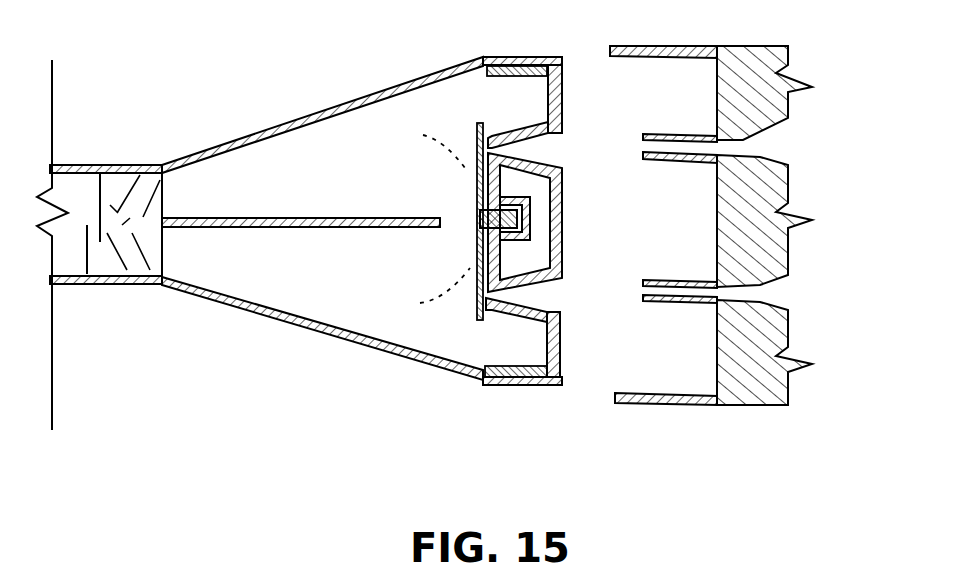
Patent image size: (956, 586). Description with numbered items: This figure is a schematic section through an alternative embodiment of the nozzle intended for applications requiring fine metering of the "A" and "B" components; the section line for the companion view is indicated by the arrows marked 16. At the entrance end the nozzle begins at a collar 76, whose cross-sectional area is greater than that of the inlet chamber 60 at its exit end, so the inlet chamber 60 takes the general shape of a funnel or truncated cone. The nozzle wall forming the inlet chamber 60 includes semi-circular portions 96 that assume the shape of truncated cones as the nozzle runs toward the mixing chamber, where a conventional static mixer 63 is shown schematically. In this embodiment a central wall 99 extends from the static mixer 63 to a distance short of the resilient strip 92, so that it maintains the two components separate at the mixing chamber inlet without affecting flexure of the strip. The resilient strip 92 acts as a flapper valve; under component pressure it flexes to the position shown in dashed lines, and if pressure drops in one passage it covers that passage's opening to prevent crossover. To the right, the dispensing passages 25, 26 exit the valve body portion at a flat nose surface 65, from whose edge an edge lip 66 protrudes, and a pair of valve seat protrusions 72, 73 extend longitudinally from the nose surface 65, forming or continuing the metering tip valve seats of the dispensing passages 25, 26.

The static mixer 63 is at (127, 197).
The semi-circular portions 96 is at (317, 110).
The inlet chamber 60 is at (344, 264).
The central wall 99 is at (263, 217).
The resilient strip 92 is at (475, 127).
The collar 76 is at (530, 386).
The flat nose surface 65 is at (715, 87).
The valve seat protrusion 73 is at (695, 165).
The valve seat protrusion 72 is at (698, 307).
The edge lip 66 is at (682, 403).
The dispensing passage 26 is at (786, 146).
The dispensing passage 25 is at (793, 291).
The section line for FIG. 16 is at (278, 100).